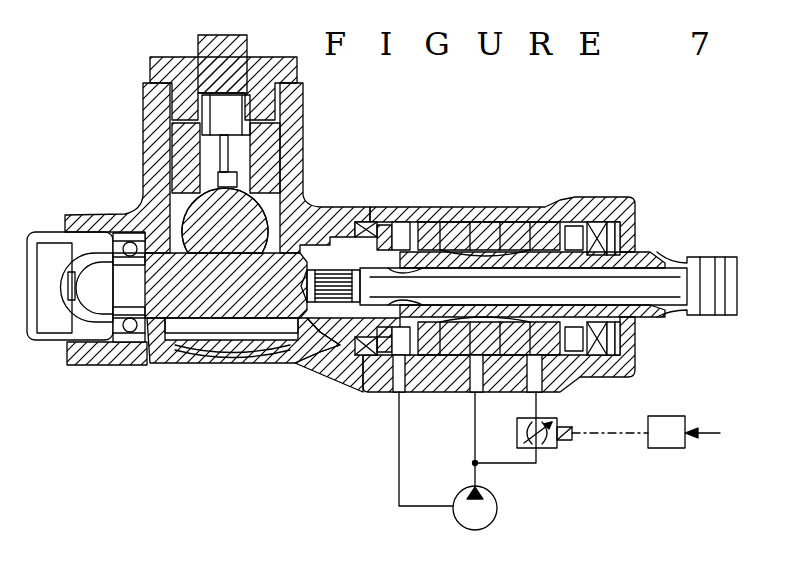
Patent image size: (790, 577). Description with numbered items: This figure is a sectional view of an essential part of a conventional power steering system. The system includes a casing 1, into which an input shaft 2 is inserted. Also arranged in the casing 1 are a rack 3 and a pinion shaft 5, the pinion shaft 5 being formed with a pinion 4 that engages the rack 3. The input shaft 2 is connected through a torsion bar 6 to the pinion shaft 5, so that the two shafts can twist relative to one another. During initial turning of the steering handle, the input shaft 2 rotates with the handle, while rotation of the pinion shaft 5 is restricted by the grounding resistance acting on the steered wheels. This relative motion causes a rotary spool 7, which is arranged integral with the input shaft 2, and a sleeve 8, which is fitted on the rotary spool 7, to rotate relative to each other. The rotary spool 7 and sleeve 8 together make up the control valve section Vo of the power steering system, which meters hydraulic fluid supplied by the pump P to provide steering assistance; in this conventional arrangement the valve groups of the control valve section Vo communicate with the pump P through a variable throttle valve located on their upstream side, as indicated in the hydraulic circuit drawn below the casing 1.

The casing 1 is at (313, 345).
The input shaft 2 is at (676, 262).
The rack 3 is at (263, 217).
The pinion 4 is at (195, 322).
The pinion shaft 5 is at (247, 305).
The torsion bar 6 is at (532, 287).
The rotary spool 7 is at (468, 257).
The sleeve 8 is at (458, 340).
The control valve section Vo is at (563, 204).
The pump P is at (497, 516).